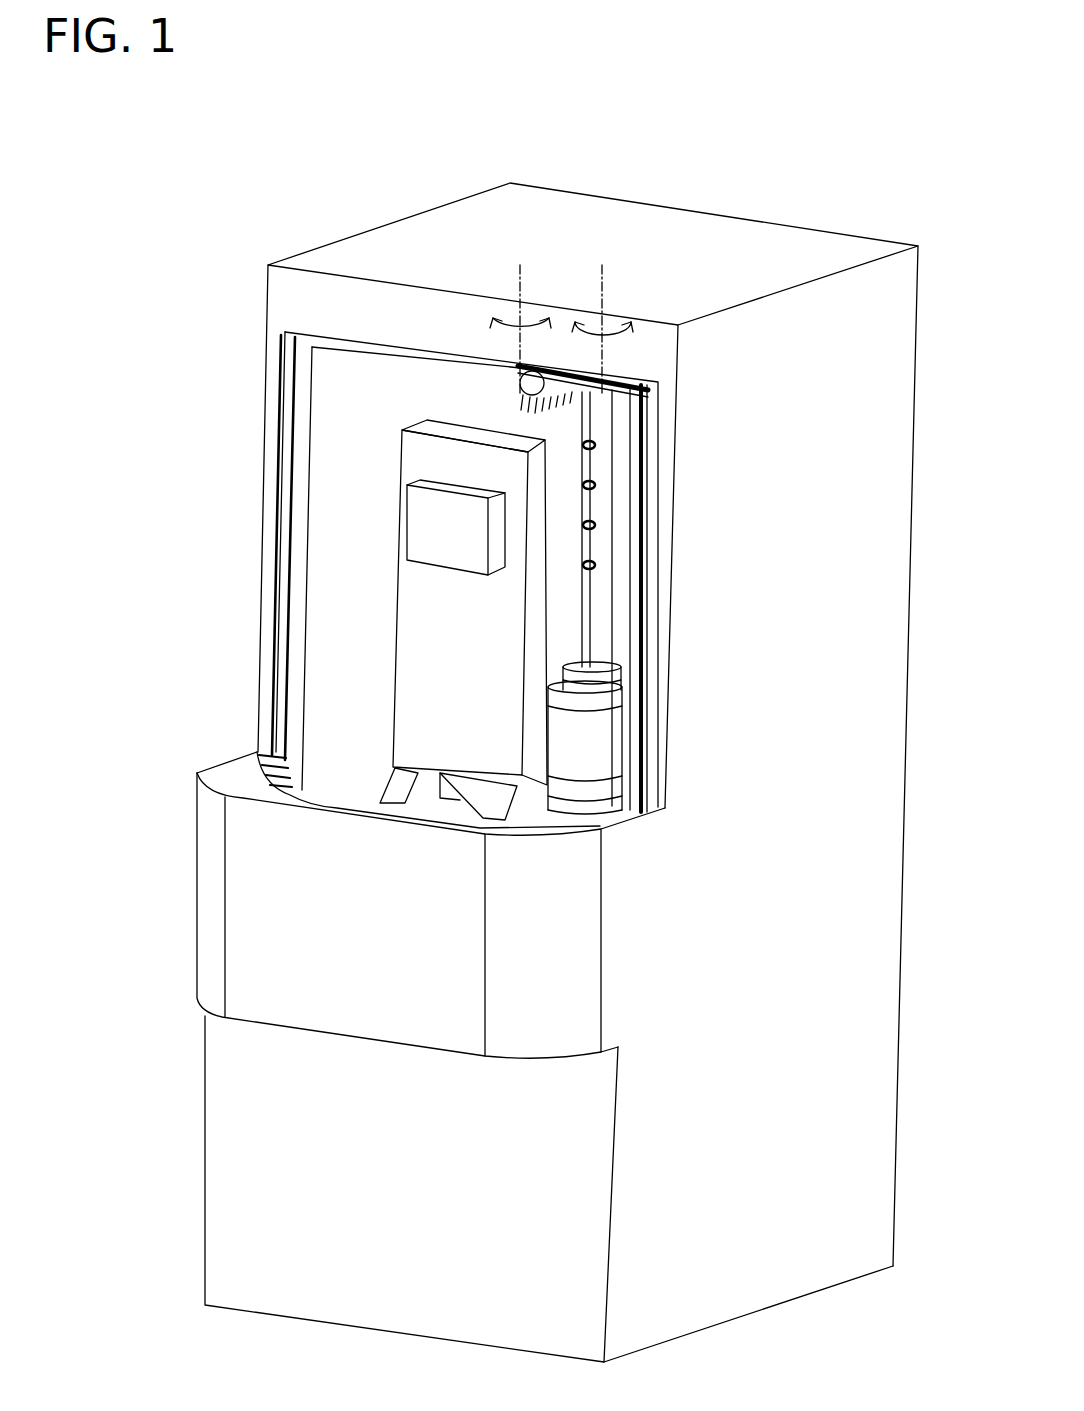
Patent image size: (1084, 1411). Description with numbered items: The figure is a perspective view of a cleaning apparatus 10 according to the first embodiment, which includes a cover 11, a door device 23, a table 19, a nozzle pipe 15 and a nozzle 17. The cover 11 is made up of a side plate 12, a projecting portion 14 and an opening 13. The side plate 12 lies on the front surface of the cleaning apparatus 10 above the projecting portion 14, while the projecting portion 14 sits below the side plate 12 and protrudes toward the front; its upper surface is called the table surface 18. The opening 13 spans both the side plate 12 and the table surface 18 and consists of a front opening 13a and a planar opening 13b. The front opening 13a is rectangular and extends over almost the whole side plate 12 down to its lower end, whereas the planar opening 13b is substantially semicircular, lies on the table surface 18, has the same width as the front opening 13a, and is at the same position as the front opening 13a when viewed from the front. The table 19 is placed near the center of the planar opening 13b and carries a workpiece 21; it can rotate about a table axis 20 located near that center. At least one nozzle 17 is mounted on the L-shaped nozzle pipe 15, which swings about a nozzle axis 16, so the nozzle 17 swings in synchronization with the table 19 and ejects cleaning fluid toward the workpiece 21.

The cleaning apparatus 10 is at (962, 116).
The cover 11 is at (868, 233).
The side plate 12 is at (377, 293).
The opening 13 is at (397, 804).
The front opening 13a is at (278, 678).
The planar opening 13b is at (412, 806).
The projecting portion 14 is at (197, 851).
The nozzle pipe 15 is at (613, 473).
The nozzle axis 16 is at (603, 288).
The nozzle 17 is at (587, 565).
The table surface 18 is at (233, 770).
The table 19 is at (413, 425).
The table axis 20 is at (521, 288).
The workpiece 21 is at (407, 537).
The door device 23 is at (303, 453).